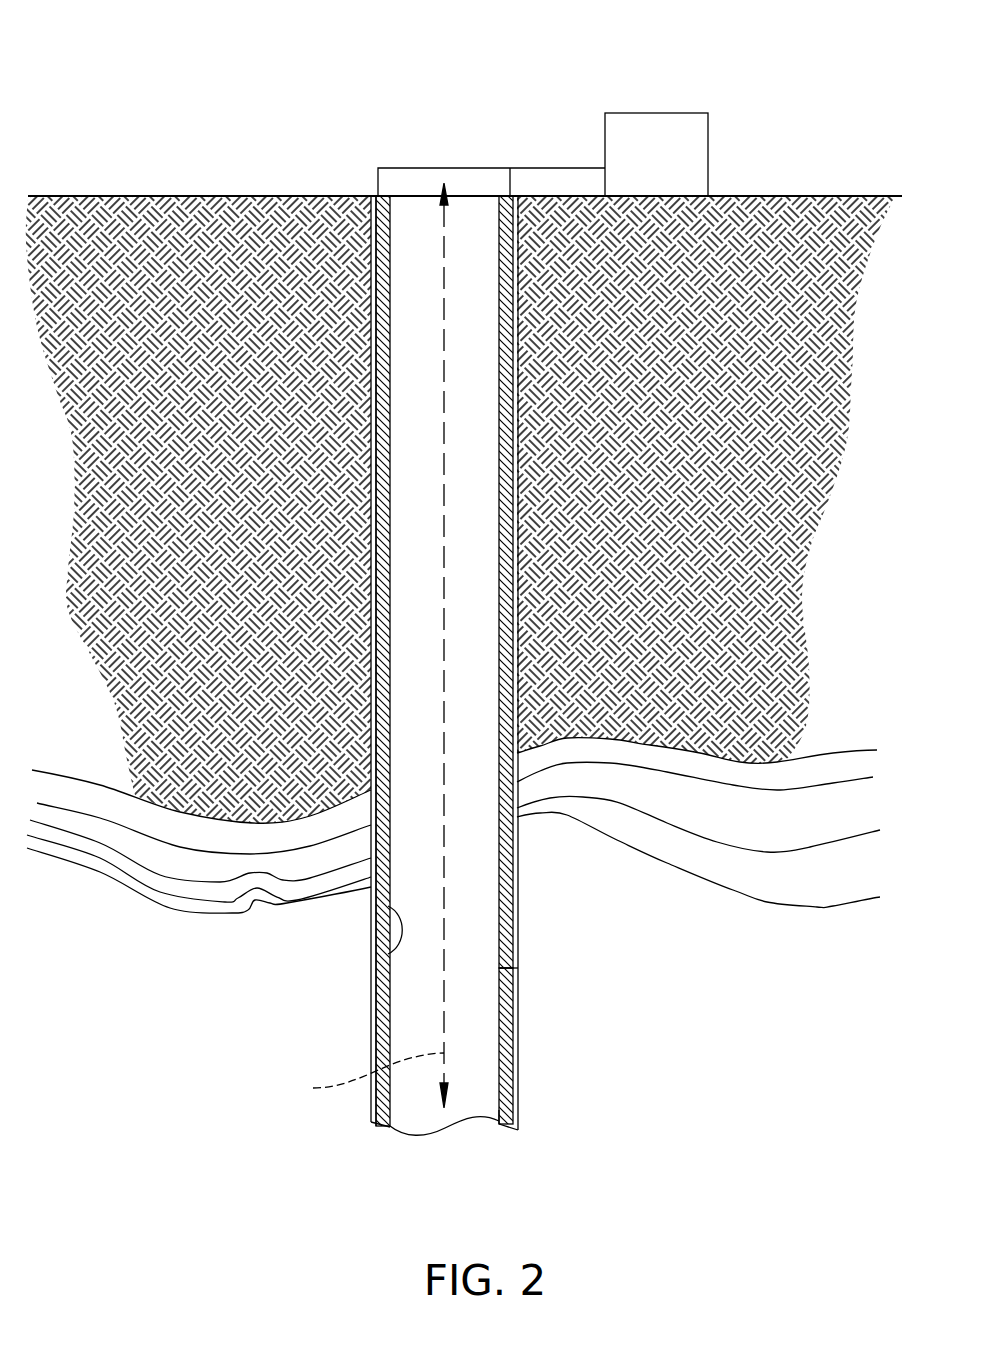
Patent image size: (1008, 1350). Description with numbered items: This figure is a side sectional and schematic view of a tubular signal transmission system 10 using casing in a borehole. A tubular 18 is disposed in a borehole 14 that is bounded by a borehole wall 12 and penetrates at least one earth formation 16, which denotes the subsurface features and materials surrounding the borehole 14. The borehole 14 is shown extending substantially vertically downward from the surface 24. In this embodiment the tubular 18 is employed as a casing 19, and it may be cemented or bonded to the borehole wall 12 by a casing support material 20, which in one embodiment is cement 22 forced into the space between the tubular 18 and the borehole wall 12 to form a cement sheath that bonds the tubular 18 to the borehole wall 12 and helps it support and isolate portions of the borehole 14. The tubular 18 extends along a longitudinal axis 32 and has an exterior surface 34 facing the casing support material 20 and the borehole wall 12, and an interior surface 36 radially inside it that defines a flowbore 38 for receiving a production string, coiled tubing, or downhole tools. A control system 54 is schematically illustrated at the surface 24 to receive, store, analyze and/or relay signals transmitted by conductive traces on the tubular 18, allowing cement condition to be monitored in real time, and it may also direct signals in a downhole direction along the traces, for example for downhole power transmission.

The tubular signal transmission system 10 is at (215, 122).
The borehole wall 12 is at (368, 980).
The borehole 14 is at (370, 196).
The earth formation 16 is at (598, 787).
The tubular 18 is at (507, 1118).
The casing 19 is at (518, 968).
The casing support material 20 is at (520, 1120).
The cement 22 is at (520, 1070).
The surface 24 is at (852, 196).
The longitudinal axis 32 is at (360, 1080).
The exterior surface 34 is at (513, 1018).
The interior surface 36 is at (377, 960).
The flowbore 38 is at (404, 725).
The control system 54 is at (653, 113).